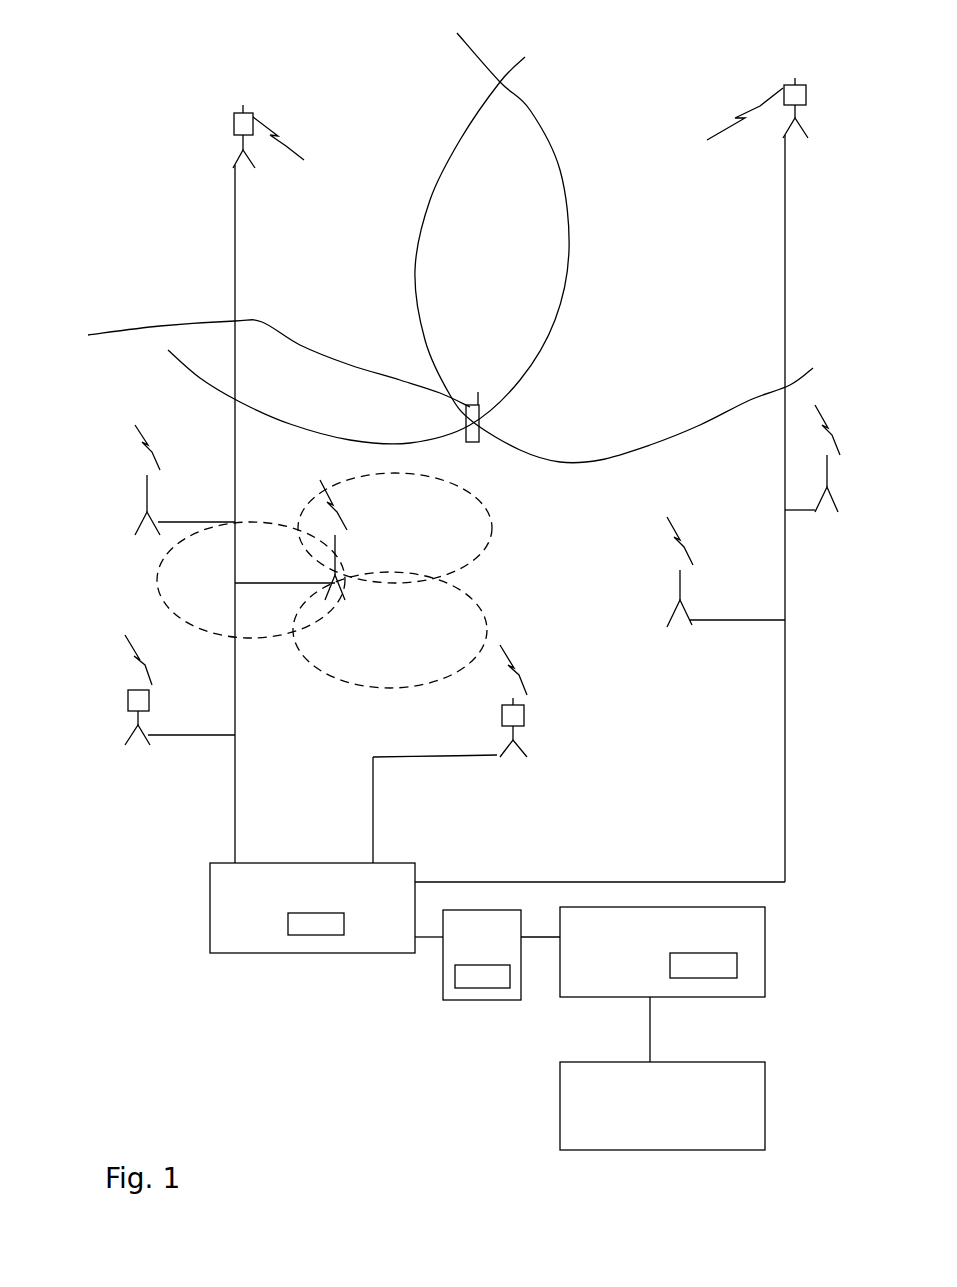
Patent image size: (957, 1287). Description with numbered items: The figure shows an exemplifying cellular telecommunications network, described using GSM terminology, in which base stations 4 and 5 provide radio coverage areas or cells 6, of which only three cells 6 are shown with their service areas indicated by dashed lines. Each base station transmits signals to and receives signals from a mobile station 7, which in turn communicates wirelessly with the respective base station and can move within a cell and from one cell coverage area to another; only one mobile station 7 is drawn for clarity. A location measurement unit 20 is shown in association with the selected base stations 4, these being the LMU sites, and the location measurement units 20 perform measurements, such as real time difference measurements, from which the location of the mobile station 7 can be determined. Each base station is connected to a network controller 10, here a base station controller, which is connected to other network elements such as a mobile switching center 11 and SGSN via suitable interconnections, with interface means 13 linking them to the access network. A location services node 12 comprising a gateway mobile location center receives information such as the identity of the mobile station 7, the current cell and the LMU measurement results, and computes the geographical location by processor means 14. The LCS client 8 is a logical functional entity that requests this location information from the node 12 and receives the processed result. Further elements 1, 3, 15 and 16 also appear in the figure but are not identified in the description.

The cell coverage area 1 is at (185, 368).
The cell coverage area 3 is at (540, 398).
The base station 4 is at (240, 162).
The base station 5 is at (145, 515).
The cell 6 is at (215, 598).
The mobile station 7 is at (269, 363).
The LCS client 8 is at (712, 1075).
The network controller 10 is at (225, 880).
The mobile switching center 11 is at (478, 952).
The location services node 12 is at (750, 927).
The interface means 13 is at (543, 940).
The processor means 14 is at (728, 968).
The memory of BSC 15 is at (292, 922).
The memory of SMLC 16 is at (480, 977).
The location measurement unit 20 is at (235, 123).